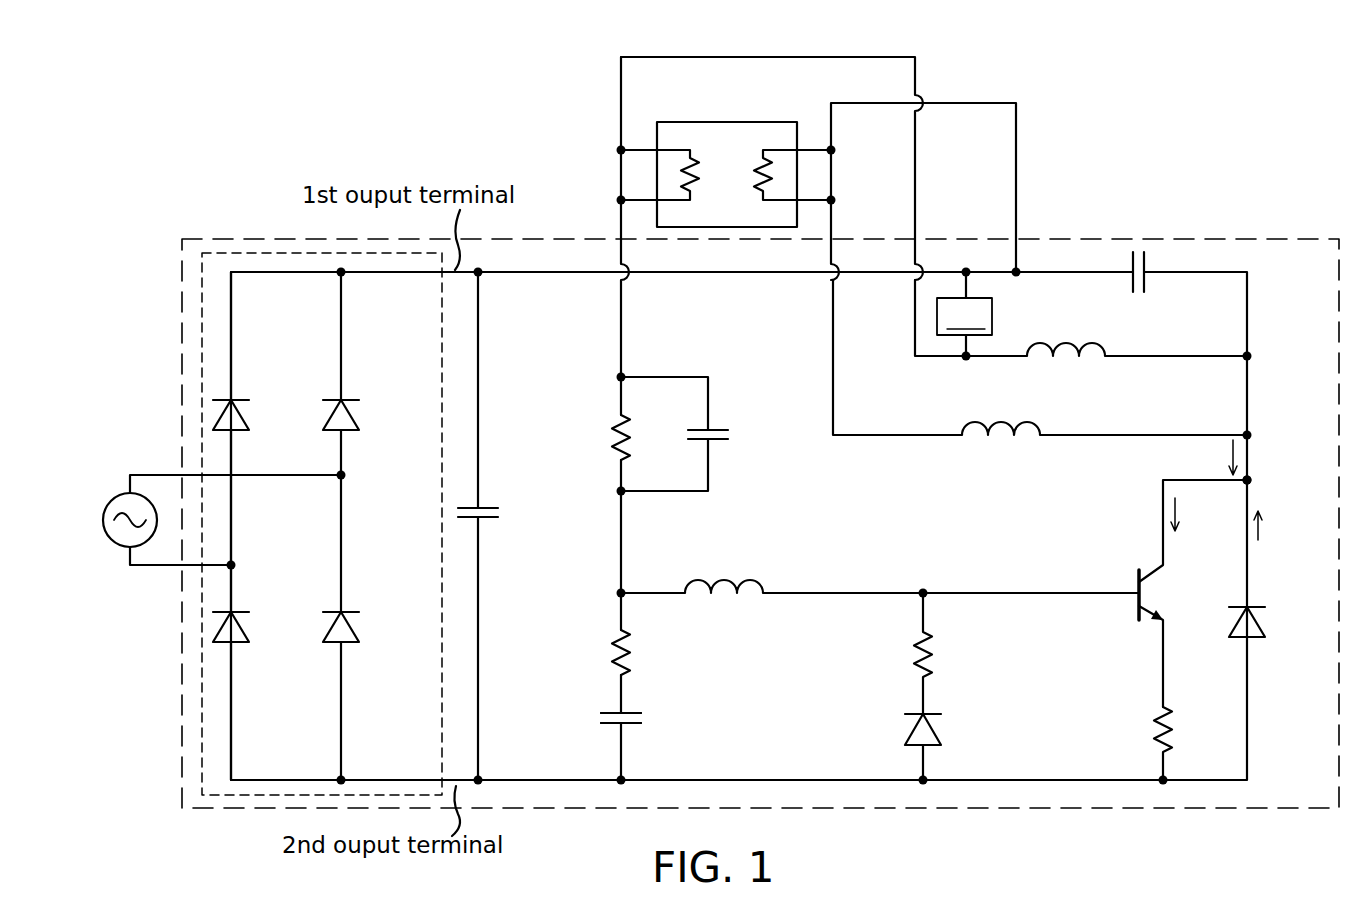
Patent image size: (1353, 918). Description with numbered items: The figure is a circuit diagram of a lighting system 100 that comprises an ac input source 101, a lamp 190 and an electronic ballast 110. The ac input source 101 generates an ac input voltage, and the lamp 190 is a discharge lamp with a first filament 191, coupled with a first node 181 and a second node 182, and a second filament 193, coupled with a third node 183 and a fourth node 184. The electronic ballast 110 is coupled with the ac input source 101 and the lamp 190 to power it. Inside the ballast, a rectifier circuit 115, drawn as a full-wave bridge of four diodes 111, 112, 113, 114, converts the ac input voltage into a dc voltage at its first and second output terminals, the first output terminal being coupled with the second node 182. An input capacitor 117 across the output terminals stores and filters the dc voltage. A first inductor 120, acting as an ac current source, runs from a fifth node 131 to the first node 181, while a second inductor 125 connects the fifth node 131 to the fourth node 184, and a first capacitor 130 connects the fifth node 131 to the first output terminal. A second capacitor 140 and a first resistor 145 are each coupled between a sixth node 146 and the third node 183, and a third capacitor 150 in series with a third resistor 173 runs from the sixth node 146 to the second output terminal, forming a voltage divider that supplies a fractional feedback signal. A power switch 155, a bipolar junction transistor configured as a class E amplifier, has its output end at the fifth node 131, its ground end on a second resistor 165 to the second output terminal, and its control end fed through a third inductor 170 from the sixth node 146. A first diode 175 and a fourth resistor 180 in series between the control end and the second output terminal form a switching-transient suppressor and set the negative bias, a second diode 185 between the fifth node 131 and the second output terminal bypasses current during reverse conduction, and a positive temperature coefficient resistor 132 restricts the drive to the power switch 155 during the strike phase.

The lighting system 100 is at (1180, 132).
The ac input source 101 is at (115, 494).
The electronic ballast 110 is at (251, 237).
The diode 111 is at (245, 415).
The diode 112 is at (355, 415).
The diode 113 is at (245, 628).
The diode 114 is at (355, 628).
The rectifier circuit 115 is at (201, 784).
The input capacitor 117 is at (500, 513).
The first inductor 120 is at (1002, 425).
The second inductor 125 is at (1068, 345).
The first capacitor 130 is at (1140, 290).
The fifth node 131 is at (1252, 478).
The positive temperature coefficient (PTC) resistor 132 is at (964, 312).
The second capacitor 140 is at (730, 436).
The first resistor 145 is at (608, 437).
The sixth node 146 is at (618, 591).
The third capacitor 150 is at (643, 718).
The power switch 155 is at (1151, 570).
The second resistor 165 is at (1150, 731).
The third inductor 170 is at (722, 582).
The third resistor 173 is at (607, 658).
The first diode 175 is at (908, 737).
The fourth resistor 180 is at (910, 658).
The first node 181 is at (836, 200).
The second node 182 is at (836, 150).
The third node 183 is at (618, 201).
The fourth node 184 is at (618, 151).
The second diode 185 is at (1262, 623).
The lamp 190 is at (724, 120).
The first filament 191 is at (758, 172).
The second filament 193 is at (696, 180).